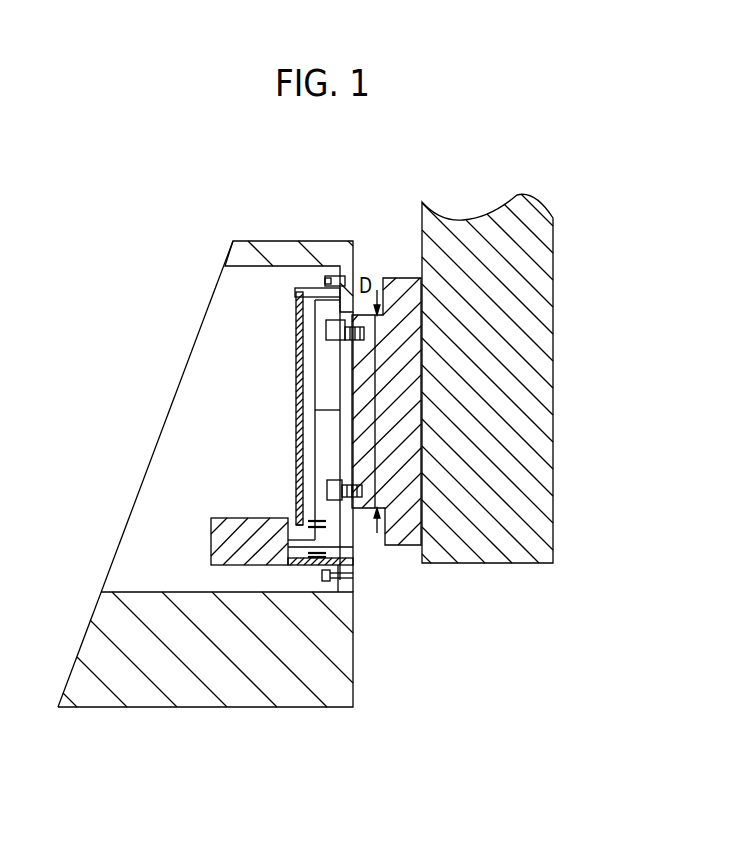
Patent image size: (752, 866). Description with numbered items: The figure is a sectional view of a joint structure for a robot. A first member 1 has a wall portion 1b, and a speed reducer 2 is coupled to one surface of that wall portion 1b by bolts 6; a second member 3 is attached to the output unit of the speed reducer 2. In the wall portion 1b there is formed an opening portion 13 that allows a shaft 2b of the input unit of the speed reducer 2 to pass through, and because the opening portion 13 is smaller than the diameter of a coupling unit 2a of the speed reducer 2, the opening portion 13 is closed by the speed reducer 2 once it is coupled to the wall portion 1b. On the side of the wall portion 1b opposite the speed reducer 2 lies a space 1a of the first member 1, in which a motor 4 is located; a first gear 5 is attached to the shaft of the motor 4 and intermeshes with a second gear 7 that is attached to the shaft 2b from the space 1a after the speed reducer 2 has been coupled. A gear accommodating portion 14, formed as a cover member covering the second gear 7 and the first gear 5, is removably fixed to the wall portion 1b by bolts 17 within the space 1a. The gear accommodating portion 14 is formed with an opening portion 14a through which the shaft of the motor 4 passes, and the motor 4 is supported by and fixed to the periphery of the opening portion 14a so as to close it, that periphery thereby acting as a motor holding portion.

The first member 1 is at (260, 670).
The space 1a is at (158, 508).
The wall portion 1b is at (347, 545).
The speed reducer 2 is at (418, 242).
The coupling unit 2a is at (362, 508).
The shaft 2b is at (337, 410).
The second member 3 is at (497, 455).
The motor 4 is at (247, 528).
The first gear 5 is at (342, 528).
The bolts 6 is at (333, 327).
The second gear 7 is at (333, 303).
The opening portion 13 is at (345, 388).
The gear accommodating portion 14 is at (295, 440).
The opening portion 14a is at (293, 528).
The bolts 17 is at (308, 585).